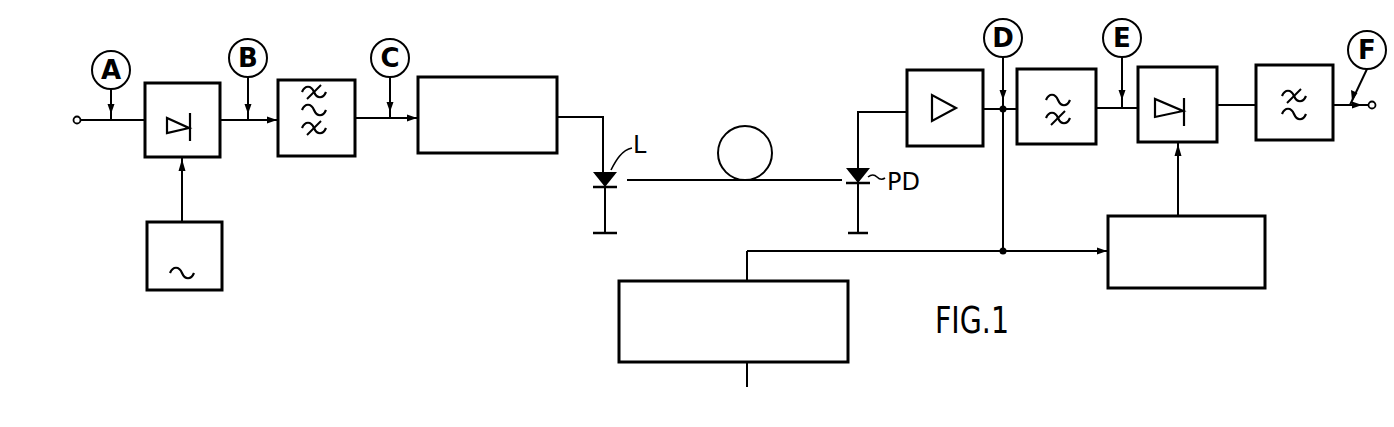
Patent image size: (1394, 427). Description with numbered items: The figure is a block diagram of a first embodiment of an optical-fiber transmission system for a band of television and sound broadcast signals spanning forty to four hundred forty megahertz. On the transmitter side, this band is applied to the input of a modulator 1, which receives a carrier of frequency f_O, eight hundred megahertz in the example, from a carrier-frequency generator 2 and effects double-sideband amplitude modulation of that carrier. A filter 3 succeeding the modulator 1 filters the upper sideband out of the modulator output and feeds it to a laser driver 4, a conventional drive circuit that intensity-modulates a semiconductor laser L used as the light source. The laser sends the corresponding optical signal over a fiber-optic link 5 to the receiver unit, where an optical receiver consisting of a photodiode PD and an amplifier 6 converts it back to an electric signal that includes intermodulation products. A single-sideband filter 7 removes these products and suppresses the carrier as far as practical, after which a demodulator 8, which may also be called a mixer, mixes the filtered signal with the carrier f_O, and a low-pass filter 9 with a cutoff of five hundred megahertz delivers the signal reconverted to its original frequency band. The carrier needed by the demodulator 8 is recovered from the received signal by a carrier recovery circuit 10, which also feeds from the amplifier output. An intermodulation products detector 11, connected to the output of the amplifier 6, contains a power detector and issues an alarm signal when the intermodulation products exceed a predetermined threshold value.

The modulator 1 is at (188, 56).
The carrier-frequency generator 2 is at (222, 250).
The filter 3 is at (318, 80).
The laser driver 4 is at (500, 77).
The fiber-optic link 5 is at (745, 125).
The amplifier 6 is at (930, 70).
The single-sideband filter 7 is at (1061, 69).
The demodulator 8 is at (1183, 67).
The low-pass filter 9 is at (1290, 65).
The carrier recovery circuit 10 is at (1265, 247).
The intermodulation products detector 11 is at (621, 300).